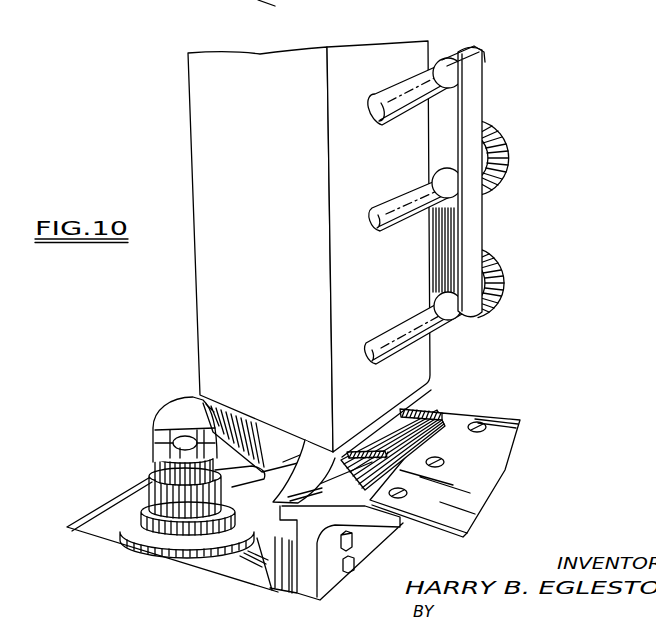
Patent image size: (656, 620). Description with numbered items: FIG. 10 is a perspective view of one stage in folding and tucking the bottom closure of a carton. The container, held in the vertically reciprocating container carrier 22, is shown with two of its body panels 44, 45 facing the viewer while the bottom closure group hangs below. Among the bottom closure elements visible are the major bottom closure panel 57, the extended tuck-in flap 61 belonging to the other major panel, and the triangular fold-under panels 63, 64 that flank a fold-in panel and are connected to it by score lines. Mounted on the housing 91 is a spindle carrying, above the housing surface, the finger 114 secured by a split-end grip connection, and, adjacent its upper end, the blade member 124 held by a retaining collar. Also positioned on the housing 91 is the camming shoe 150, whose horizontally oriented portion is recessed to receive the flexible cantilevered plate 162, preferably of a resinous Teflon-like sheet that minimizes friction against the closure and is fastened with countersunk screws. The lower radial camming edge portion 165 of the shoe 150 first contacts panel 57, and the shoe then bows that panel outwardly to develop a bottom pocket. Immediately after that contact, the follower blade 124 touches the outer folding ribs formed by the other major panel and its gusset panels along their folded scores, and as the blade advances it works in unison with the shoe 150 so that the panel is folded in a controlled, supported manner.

The container carrier 22 is at (492, 116).
The body panel 44 is at (275, 270).
The body panel 45 is at (400, 281).
The major bottom closure panel 57 is at (336, 450).
The tuck-in flap 61 is at (288, 450).
The fold-under panel 63 is at (273, 453).
The fold-under panel 64 is at (291, 498).
The housing 91 is at (72, 520).
The finger 114 is at (147, 502).
The blade member 124 is at (151, 410).
The camming shoe 150 is at (447, 395).
The flexible cantilevered plate 162 is at (519, 416).
The lower radial camming edge portion 165 is at (273, 502).